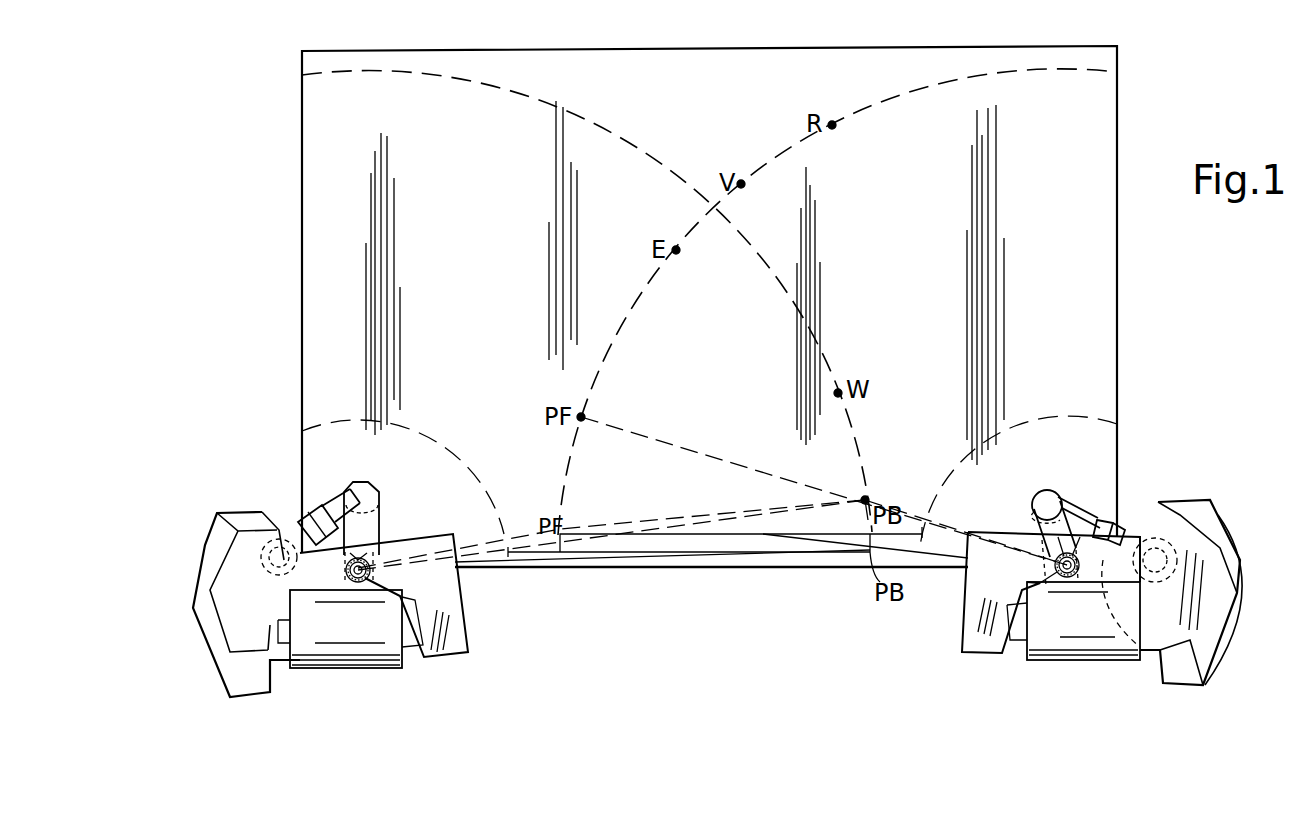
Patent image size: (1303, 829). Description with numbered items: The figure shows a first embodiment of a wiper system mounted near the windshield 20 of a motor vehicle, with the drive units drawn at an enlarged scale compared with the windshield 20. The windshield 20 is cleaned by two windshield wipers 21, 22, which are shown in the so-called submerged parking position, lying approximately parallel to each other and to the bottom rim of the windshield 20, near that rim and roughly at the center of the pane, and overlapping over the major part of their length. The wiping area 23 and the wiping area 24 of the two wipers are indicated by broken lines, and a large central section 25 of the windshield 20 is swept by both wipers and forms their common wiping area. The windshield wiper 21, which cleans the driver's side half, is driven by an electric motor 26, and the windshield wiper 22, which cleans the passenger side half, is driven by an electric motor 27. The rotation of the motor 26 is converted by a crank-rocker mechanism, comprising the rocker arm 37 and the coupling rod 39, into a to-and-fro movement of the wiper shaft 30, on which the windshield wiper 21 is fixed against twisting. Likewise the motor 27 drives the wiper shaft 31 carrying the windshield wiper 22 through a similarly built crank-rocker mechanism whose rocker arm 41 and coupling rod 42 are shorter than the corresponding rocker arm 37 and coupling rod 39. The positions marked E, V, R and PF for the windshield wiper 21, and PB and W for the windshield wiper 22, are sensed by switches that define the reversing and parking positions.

The windshield 20 is at (1119, 291).
The windshield wiper 21 is at (707, 533).
The windshield wiper 22 is at (693, 553).
The wiping area 23 is at (886, 102).
The wiping area 24 is at (577, 117).
The central section 25 is at (704, 312).
The electric motor 26 is at (1082, 652).
The electric motor 27 is at (340, 643).
The wiper shaft 30 is at (1055, 573).
The wiper shaft 31 is at (372, 574).
The rocker arm 37 is at (1040, 528).
The coupling rod 39 is at (1085, 520).
The rocker arm 41 is at (381, 524).
The coupling rod 42 is at (322, 512).